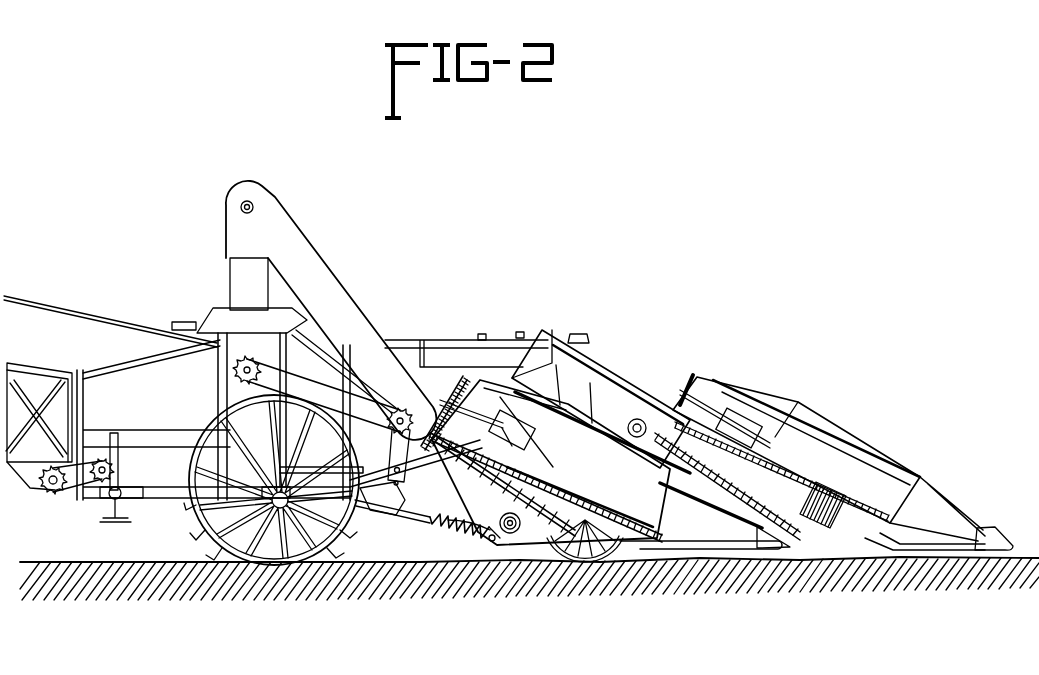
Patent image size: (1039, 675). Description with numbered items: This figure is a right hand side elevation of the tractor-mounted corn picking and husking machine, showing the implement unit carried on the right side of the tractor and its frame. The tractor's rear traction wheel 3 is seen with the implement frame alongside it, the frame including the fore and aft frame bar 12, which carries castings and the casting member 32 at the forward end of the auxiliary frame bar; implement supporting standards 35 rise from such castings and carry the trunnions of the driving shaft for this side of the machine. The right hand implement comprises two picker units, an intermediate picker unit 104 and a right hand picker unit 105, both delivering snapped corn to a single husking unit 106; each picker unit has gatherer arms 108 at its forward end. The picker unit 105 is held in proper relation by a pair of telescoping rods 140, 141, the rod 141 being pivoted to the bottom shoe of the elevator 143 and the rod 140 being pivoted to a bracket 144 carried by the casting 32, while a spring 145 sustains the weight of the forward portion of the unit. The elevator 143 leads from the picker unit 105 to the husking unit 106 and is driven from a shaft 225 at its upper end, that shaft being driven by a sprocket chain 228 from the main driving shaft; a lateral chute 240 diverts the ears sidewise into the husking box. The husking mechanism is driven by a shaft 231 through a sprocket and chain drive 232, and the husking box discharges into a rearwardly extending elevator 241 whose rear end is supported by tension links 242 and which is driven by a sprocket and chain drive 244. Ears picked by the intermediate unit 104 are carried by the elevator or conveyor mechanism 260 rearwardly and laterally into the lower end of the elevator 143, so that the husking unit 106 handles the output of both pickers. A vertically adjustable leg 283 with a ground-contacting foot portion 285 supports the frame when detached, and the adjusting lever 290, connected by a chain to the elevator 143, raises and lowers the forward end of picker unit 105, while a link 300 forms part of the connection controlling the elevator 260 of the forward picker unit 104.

The rear traction wheel 3 is at (205, 538).
The frame bar 12 is at (163, 490).
The casting member 32 is at (382, 504).
The implement supporting standard 35 is at (403, 446).
The picker unit 104 is at (933, 483).
The picker unit 105 is at (695, 527).
The husking unit 106 is at (142, 372).
The gatherer arm 108 is at (895, 527).
The telescoping rod 140 is at (425, 522).
The telescoping rod 141 is at (492, 541).
The elevator 143 is at (356, 318).
The bracket 144 is at (392, 521).
The spring 145 is at (466, 530).
The shaft 225 is at (251, 204).
The sprocket chain 228 is at (330, 340).
The shaft 231 is at (236, 370).
The sprocket and chain drive 232 is at (290, 395).
The lateral chute 240 is at (240, 290).
The rearwardly extending elevator 241 is at (38, 356).
The tension link 242 is at (52, 305).
The sprocket and chain drive 244 is at (66, 494).
The elevator or conveyor mechanism 260 is at (612, 378).
The leg 283 is at (120, 458).
The foot portion 285 is at (118, 522).
The adjusting lever 290 is at (180, 324).
The link 300 is at (398, 343).